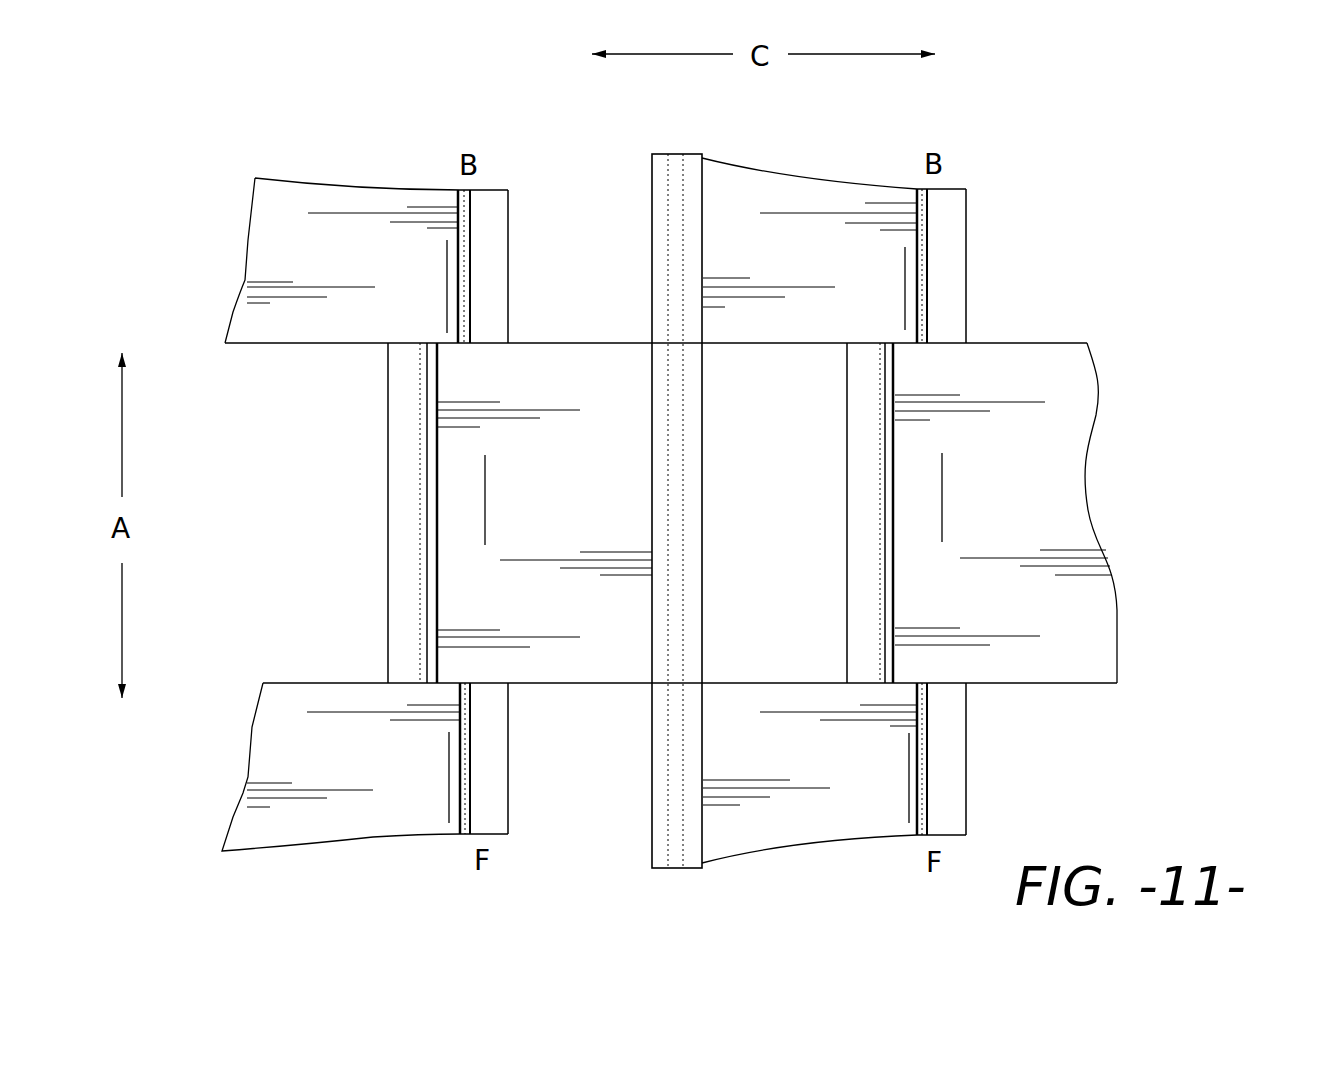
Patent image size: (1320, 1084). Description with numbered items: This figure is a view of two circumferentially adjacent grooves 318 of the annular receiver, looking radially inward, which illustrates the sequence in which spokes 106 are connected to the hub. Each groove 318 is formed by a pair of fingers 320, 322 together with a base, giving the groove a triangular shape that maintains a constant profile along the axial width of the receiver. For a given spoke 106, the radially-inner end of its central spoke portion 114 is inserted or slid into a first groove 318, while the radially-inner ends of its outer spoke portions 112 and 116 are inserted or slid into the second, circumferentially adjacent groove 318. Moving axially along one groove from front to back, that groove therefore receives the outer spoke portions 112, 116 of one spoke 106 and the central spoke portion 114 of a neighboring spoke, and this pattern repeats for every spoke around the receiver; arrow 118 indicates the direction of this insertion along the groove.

The spoke 106 is at (588, 905).
The outer spoke portion 112 is at (290, 823).
The central spoke portion 114 is at (538, 358).
The outer spoke portion 116 is at (803, 187).
The direction of travel arrow 118 is at (677, 922).
The groove 318 is at (880, 872).
The finger 320 is at (387, 513).
The finger 322 is at (498, 240).